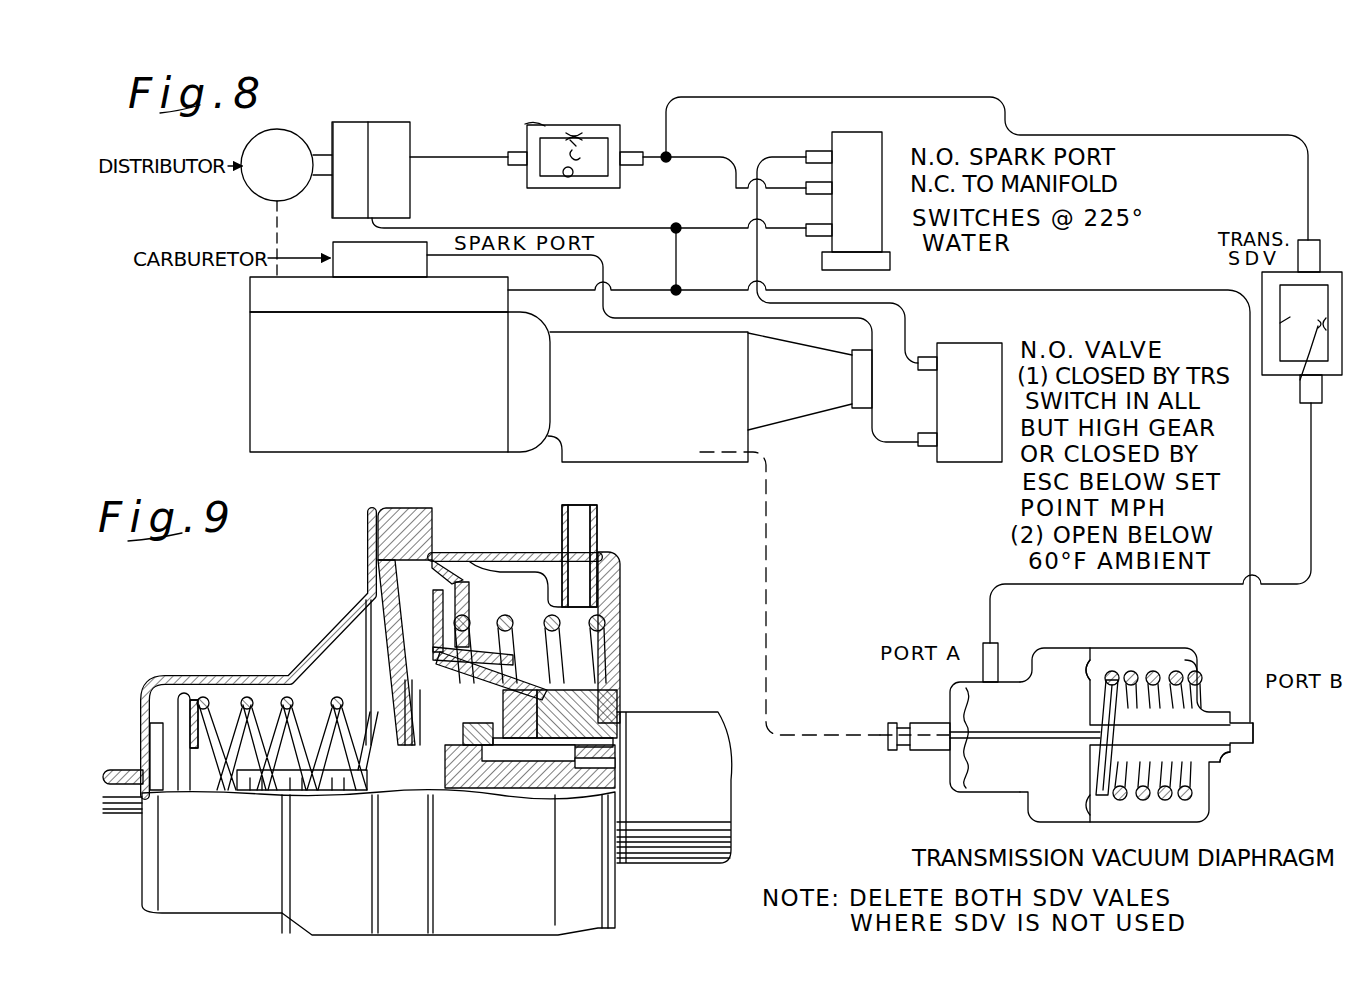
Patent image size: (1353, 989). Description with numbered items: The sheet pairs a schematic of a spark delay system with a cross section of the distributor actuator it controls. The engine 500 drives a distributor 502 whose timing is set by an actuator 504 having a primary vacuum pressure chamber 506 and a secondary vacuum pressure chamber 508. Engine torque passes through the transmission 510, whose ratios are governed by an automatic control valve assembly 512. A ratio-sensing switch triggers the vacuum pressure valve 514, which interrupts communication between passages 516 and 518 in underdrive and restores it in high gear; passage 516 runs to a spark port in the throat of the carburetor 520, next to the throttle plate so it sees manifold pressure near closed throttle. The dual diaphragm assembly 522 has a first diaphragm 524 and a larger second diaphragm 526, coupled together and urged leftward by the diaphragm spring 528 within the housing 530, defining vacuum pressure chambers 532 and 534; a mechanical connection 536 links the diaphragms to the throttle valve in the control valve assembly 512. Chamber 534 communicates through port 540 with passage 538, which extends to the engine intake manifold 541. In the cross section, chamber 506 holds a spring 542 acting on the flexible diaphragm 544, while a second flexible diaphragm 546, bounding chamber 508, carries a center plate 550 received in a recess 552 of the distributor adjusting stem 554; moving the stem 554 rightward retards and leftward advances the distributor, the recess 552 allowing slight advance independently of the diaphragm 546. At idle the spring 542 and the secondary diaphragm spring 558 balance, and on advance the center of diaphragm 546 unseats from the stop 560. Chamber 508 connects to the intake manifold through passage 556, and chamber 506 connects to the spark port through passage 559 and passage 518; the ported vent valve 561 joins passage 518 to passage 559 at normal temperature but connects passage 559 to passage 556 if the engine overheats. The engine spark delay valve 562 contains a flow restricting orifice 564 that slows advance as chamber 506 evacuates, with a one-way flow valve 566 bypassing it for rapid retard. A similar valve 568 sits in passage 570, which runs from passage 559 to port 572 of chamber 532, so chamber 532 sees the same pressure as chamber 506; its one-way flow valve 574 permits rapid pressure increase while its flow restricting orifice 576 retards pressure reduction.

In FIG. 8, the engine 500 is at (446, 432).
In FIG. 8, the distributor 502 is at (250, 177).
In FIG. 8, the actuator 504 is at (406, 122).
In FIG. 9, the actuator 504 is at (622, 896).
In FIG. 8, the primary vacuum pressure chamber 506 is at (410, 186).
In FIG. 9, the primary vacuum pressure chamber 506 is at (362, 632).
In FIG. 8, the secondary vacuum pressure chamber 508 is at (332, 124).
In FIG. 9, the secondary vacuum pressure chamber 508 is at (513, 575).
In FIG. 8, the transmission 510 is at (688, 458).
In FIG. 8, the automatic control valve assembly 512 is at (608, 462).
In FIG. 8, the vacuum pressure valve 514 is at (991, 342).
In FIG. 8, the passage 516 is at (897, 448).
In FIG. 8, the passage 518 is at (906, 328).
In FIG. 8, the carburetor 520 is at (357, 272).
In FIG. 8, the dual diaphragm assembly 522 is at (1042, 646).
In FIG. 8, the first diaphragm 524 is at (975, 713).
In FIG. 8, the second diaphragm 526 is at (1093, 753).
In FIG. 8, the diaphragm spring 528 is at (1150, 677).
In FIG. 8, the housing 530 is at (1080, 648).
In FIG. 8, the vacuum pressure chamber 532 is at (1002, 772).
In FIG. 8, the vacuum pressure chamber 534 is at (1185, 668).
In FIG. 8, the mechanical connection 536 is at (834, 728).
In FIG. 8, the passage 538 is at (1256, 724).
In FIG. 8, the port 540 is at (1232, 760).
In FIG. 8, the engine intake manifold 541 is at (482, 304).
In FIG. 9, the spring 542 is at (238, 707).
In FIG. 9, the flexible diaphragm 544 is at (346, 648).
In FIG. 9, the second flexible diaphragm 546 is at (475, 570).
In FIG. 9, the center plate 550 is at (428, 712).
In FIG. 9, the recess 552 is at (505, 763).
In FIG. 9, the distributor adjusting stem 554 is at (620, 750).
In FIG. 8, the passage 556 is at (650, 224).
In FIG. 9, the secondary diaphragm spring 558 is at (560, 623).
In FIG. 8, the passage 559 is at (703, 153).
In FIG. 9, the stop 560 is at (530, 678).
In FIG. 8, the ported vent valve 561 is at (882, 136).
In FIG. 8, the engine spark delay valve 562 is at (602, 122).
In FIG. 8, the flow restricting orifice 564 is at (545, 126).
In FIG. 8, the one-way flow valve 566 is at (569, 179).
In FIG. 8, the valve 568 is at (1328, 238).
In FIG. 8, the passage 570 is at (1310, 428).
In FIG. 8, the port 572 is at (971, 651).
In FIG. 8, the one-way flow valve 574 is at (1276, 323).
In FIG. 8, the flow restricting orifice 576 is at (1310, 340).